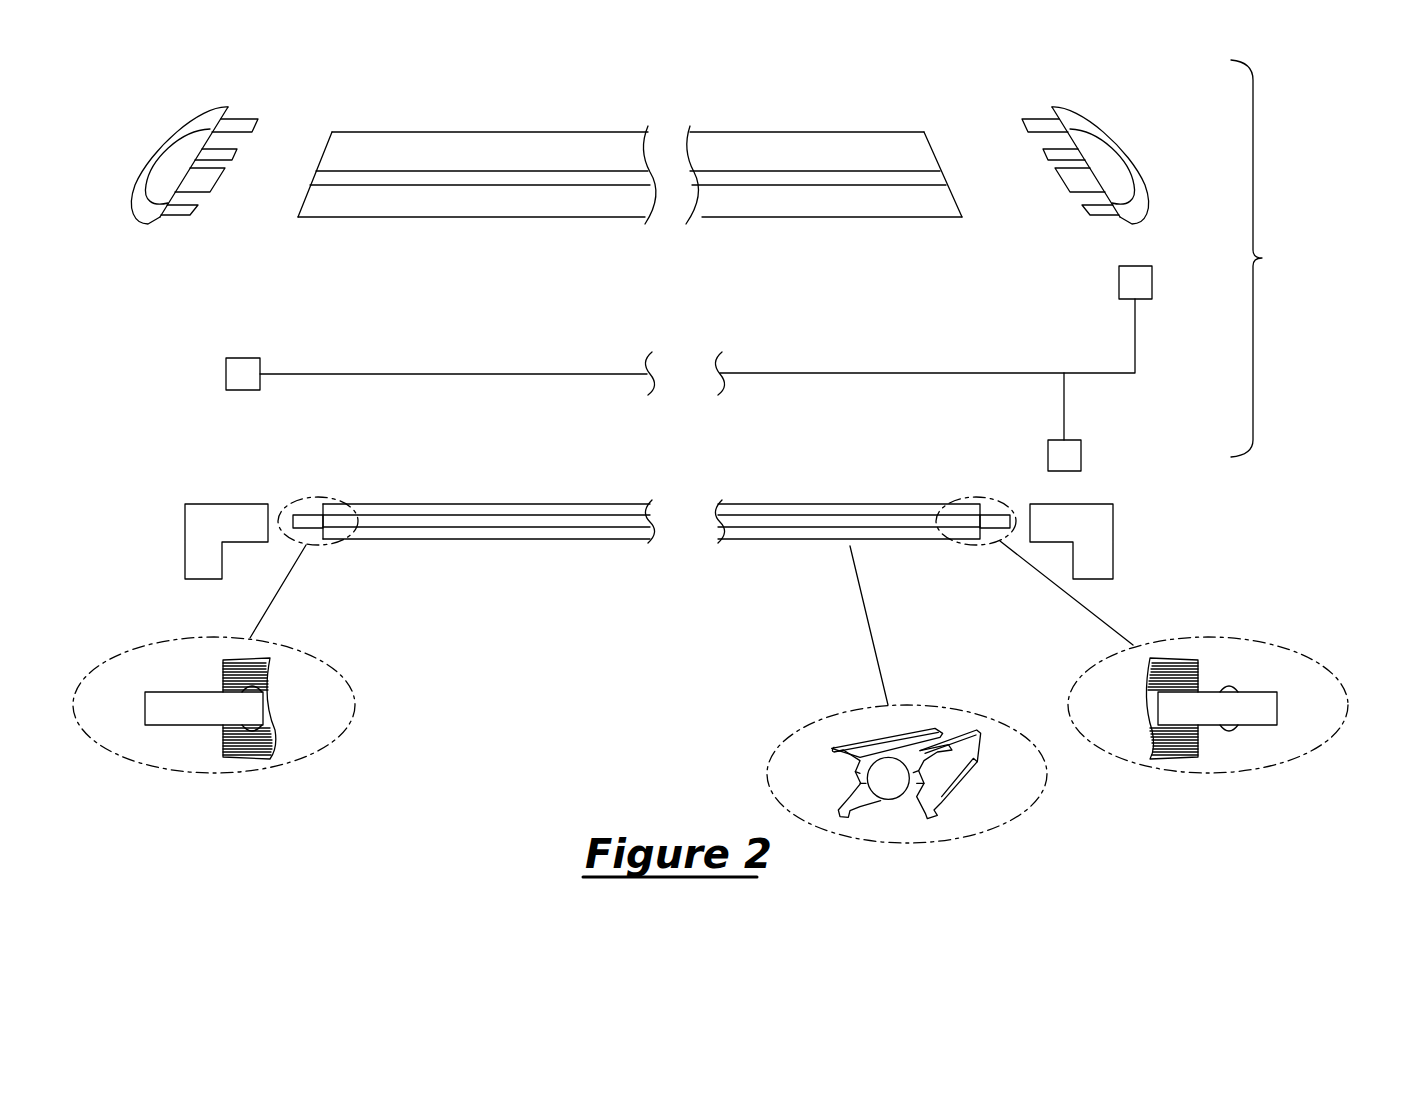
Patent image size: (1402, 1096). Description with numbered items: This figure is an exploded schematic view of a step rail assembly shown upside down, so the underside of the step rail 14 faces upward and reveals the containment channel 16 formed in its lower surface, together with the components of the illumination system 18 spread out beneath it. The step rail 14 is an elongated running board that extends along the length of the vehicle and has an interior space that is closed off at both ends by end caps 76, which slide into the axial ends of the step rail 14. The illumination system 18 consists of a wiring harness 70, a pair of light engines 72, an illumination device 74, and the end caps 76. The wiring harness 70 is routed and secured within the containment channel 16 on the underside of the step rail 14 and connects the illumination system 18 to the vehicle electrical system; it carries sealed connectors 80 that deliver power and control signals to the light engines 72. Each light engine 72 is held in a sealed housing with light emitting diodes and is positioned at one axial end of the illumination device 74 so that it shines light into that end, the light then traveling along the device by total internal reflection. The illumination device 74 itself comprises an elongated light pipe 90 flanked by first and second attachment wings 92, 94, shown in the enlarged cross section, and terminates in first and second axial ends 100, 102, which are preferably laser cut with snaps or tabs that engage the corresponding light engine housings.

The step rail 14 is at (655, 188).
The containment channel 16 is at (930, 176).
The illumination system 18 is at (1266, 258).
The wiring harness 70 is at (714, 367).
The light engine 72 is at (208, 513).
The illumination device 74 is at (499, 545).
The end cap 76 is at (183, 118).
The sealed connector 80 is at (240, 368).
The elongated light pipe 90 is at (880, 820).
The first attachment wing 92 is at (946, 806).
The second attachment wing 94 is at (907, 714).
The first axial end 100 is at (215, 632).
The second axial end 102 is at (1169, 612).